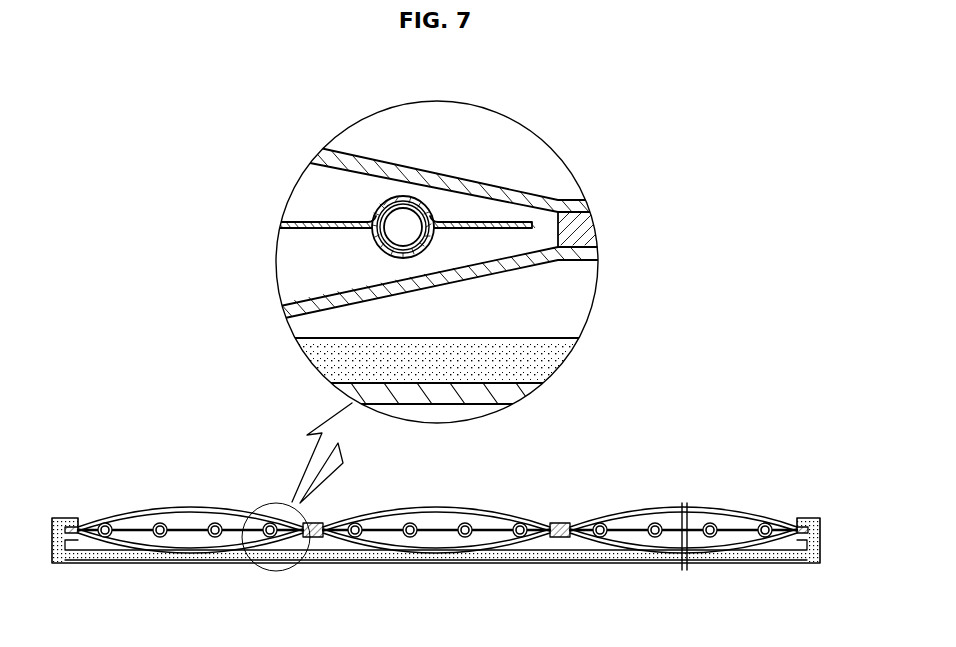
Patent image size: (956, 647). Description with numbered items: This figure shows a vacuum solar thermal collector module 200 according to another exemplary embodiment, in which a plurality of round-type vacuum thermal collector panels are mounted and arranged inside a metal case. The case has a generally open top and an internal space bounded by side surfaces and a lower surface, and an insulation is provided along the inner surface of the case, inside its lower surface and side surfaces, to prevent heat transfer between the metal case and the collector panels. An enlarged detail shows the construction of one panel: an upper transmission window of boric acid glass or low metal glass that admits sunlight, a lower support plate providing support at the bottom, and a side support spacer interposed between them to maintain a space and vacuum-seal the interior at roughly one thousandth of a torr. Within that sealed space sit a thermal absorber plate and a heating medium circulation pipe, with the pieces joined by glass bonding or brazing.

The vacuum solar thermal collector module 200 is at (142, 467).